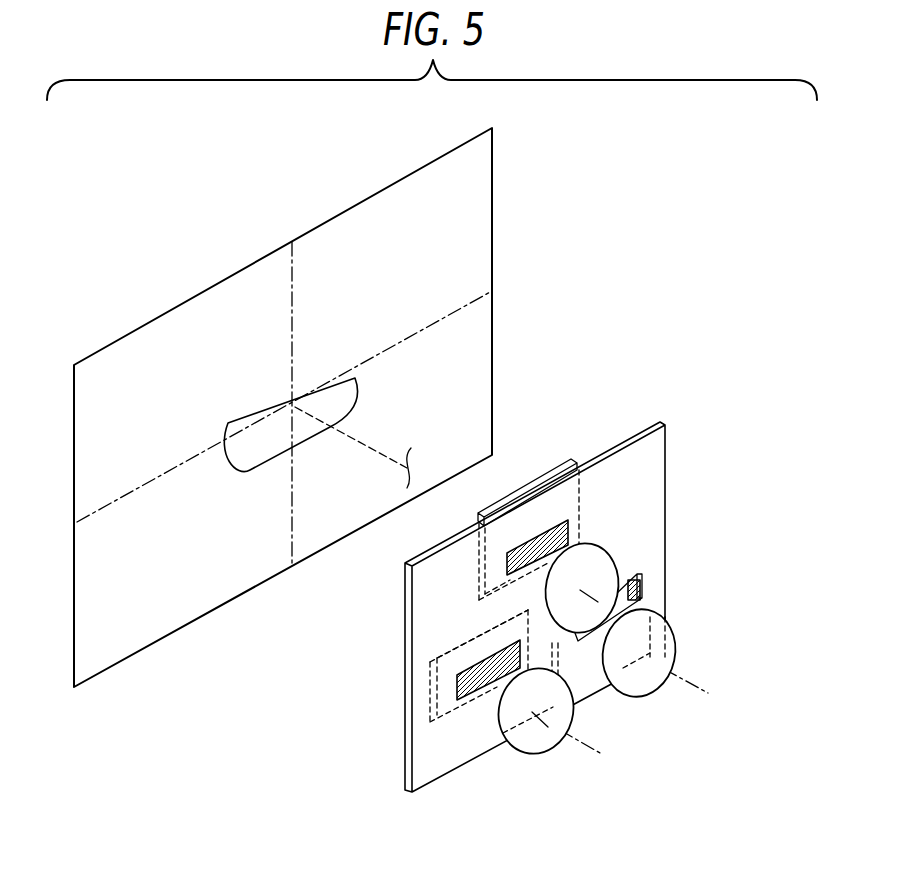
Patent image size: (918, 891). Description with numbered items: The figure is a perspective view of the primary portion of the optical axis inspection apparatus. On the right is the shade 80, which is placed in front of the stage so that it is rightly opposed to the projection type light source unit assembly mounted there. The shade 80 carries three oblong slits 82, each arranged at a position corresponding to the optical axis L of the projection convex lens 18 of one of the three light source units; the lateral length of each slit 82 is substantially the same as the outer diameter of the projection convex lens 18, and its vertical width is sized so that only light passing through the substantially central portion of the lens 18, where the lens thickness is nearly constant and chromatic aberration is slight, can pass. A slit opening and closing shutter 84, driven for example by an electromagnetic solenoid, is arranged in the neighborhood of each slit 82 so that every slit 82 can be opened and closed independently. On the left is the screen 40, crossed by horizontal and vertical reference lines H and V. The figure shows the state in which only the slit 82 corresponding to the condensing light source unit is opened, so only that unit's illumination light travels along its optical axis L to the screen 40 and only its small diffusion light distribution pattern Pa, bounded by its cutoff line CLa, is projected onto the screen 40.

The screen 40 is at (492, 178).
The shade 80 is at (658, 470).
The oblong slit 82 is at (503, 580).
The slit opening and closing shutter 84 is at (560, 462).
The projection convex lens 18 is at (592, 547).
The light distribution pattern Pa is at (260, 472).
The cutoff line CLa is at (328, 388).
The optical axis L is at (383, 455).
The horizontal reference line H is at (290, 406).
The vertical reference line V is at (282, 414).